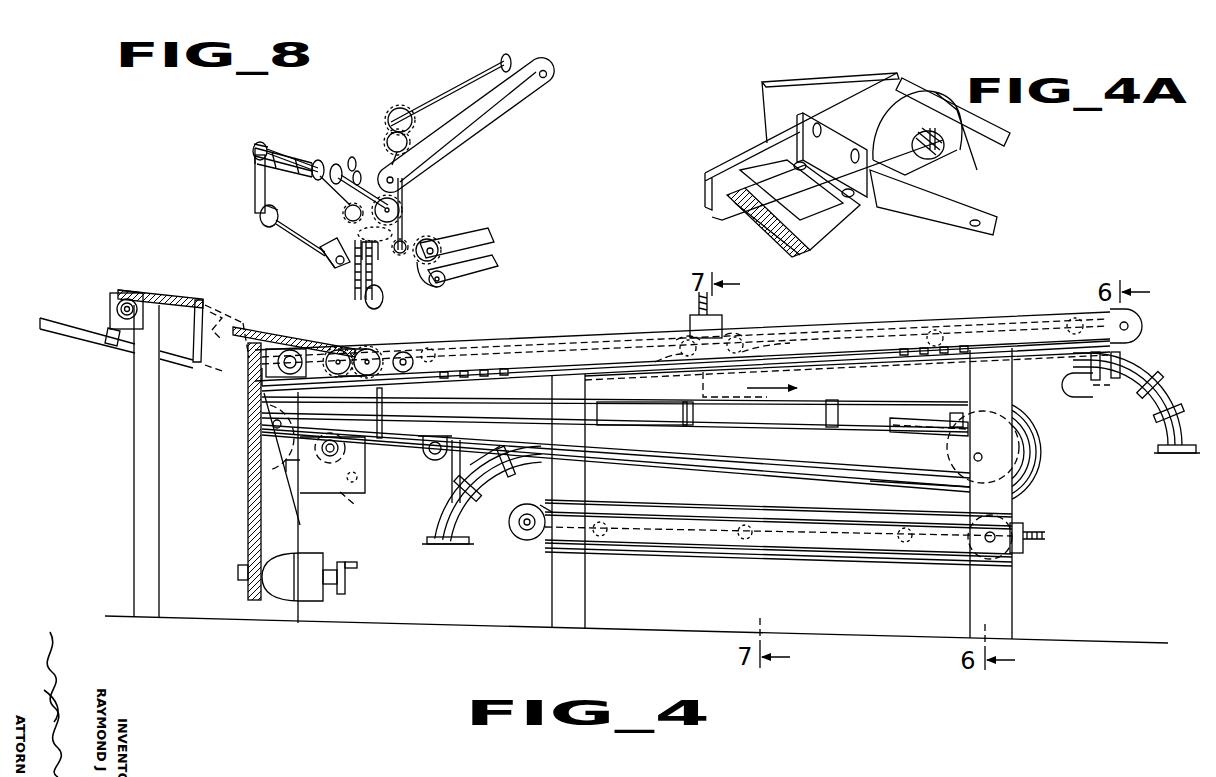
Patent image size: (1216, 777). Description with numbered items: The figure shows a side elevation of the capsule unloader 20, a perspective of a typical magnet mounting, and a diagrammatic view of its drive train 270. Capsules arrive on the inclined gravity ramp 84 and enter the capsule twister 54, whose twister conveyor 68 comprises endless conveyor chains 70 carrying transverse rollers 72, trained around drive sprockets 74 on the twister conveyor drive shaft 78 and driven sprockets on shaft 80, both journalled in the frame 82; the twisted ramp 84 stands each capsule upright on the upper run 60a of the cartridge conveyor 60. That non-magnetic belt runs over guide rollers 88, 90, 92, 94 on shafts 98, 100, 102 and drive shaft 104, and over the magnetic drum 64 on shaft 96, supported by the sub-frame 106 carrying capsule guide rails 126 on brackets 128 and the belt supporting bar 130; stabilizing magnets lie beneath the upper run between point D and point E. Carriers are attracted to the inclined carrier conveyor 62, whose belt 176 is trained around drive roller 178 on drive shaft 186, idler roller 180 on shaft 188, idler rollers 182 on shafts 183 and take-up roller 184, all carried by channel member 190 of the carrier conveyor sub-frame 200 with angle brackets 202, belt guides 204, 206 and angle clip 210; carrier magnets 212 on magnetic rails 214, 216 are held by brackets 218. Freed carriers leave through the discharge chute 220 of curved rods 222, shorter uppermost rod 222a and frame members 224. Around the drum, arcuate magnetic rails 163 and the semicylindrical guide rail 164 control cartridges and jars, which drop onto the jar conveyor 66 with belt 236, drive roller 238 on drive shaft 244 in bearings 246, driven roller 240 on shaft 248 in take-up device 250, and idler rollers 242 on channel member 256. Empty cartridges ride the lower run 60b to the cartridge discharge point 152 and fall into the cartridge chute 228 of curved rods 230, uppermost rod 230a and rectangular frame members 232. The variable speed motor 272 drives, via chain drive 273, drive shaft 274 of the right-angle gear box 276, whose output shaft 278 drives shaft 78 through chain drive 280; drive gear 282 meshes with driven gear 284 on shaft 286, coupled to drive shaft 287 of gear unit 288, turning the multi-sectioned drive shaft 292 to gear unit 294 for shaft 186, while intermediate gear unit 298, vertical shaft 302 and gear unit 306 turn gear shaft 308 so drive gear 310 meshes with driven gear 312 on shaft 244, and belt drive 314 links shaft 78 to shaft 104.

In FIG. 4, the capsule unloader 20 is at (578, 333).
In FIG. 4, the capsule twister 54 is at (122, 290).
In FIG. 8, the capsule twister 54 is at (252, 158).
In FIG. 4, the cartridge conveyor 60 is at (862, 426).
In FIG. 8, the cartridge conveyor 60 is at (328, 262).
In FIG. 4, the upper run of cartridge conveyor 60a is at (806, 418).
In FIG. 4, the lower run of cartridge conveyor 60b is at (965, 491).
In FIG. 4, the carrier conveyor 62 is at (768, 330).
In FIG. 8, the carrier conveyor 62 is at (548, 95).
In FIG. 4, the magnetic drum 64 is at (945, 455).
In FIG. 4, the jar conveyor 66 is at (670, 496).
In FIG. 8, the jar conveyor 66 is at (490, 240).
In FIG. 4, the twister conveyor 68 is at (185, 290).
In FIG. 4, the endless conveyor chains 70 is at (130, 292).
In FIG. 8, the endless conveyor chains 70 is at (252, 152).
In FIG. 8, the transverse rollers 72 is at (334, 163).
In FIG. 8, the drive sprockets 74 is at (316, 160).
In FIG. 4, the twister conveyor drive shaft 78 is at (300, 350).
In FIG. 8, the twister conveyor drive shaft 78 is at (262, 142).
In FIG. 4, the shaft 80 is at (118, 338).
In FIG. 4, the frame 82 is at (133, 451).
In FIG. 4, the inclined gravity ramp 84 is at (42, 332).
In FIG. 4, the guide roller 88 is at (426, 442).
In FIG. 4, the guide roller 90 is at (363, 452).
In FIG. 4, the guide roller 92 is at (348, 486).
In FIG. 4, the guide roller 94 is at (265, 463).
In FIG. 4, the shaft 96 is at (980, 455).
In FIG. 4, the shaft 98 is at (447, 442).
In FIG. 4, the shaft 100 is at (320, 458).
In FIG. 4, the shaft 102 is at (348, 482).
In FIG. 4, the drive shaft of cartridge conveyor 104 is at (273, 427).
In FIG. 8, the drive shaft of cartridge conveyor 104 is at (262, 224).
In FIG. 4, the sub-frame 106 is at (702, 454).
In FIG. 4, the capsule guide rails 126 is at (606, 408).
In FIG. 4, the brackets 128 is at (683, 412).
In FIG. 4, the belt supporting bar 130 is at (740, 468).
In FIG. 4, the cartridge discharge point 152 is at (500, 443).
In FIG. 4, the arcuate magnetic rails 163 is at (1035, 486).
In FIG. 4, the semicylindrical guide rail 164 is at (1043, 456).
In FIG. 4, the endless non-magnetic belt 176 is at (958, 330).
In FIG. 4A, the endless non-magnetic belt 176 is at (990, 118).
In FIG. 4, the drive roller 178 is at (1132, 306).
In FIG. 4, the idler roller 180 is at (460, 353).
In FIG. 4, the idler rollers 182 is at (435, 350).
In FIG. 4, the shafts 183 is at (680, 340).
In FIG. 4, the take-up roller 184 is at (716, 320).
In FIG. 4, the drive shaft of carrier conveyor 186 is at (1135, 324).
In FIG. 8, the drive shaft of carrier conveyor 186 is at (548, 82).
In FIG. 4, the shaft 188 is at (408, 352).
In FIG. 4, the channel member 190 is at (805, 351).
In FIG. 4, the carrier conveyor sub-frame 200 is at (932, 330).
In FIG. 4, the angle brackets 202 is at (585, 368).
In FIG. 4A, the angle brackets 202 is at (985, 210).
In FIG. 4A, the angle belt guide 204 is at (873, 210).
In FIG. 4A, the angle belt guide 206 is at (755, 157).
In FIG. 4A, the angle clip 210 is at (790, 140).
In FIG. 4A, the carrier magnets 212 is at (912, 105).
In FIG. 4A, the magnetic rail 214 is at (838, 218).
In FIG. 4A, the magnetic rail 216 is at (760, 185).
In FIG. 4A, the brackets 218 is at (835, 130).
In FIG. 4, the discharge chute 220 is at (1152, 430).
In FIG. 4, the curved rods 222 is at (1128, 392).
In FIG. 4, the uppermost curved rod 222a is at (1115, 350).
In FIG. 4, the frame members 224 is at (1168, 392).
In FIG. 4, the cartridge chute 228 is at (423, 531).
In FIG. 4, the curved rods 230 is at (448, 522).
In FIG. 4, the uppermost rod 230a is at (462, 457).
In FIG. 4, the rectangular frame members 232 is at (478, 503).
In FIG. 4, the endless belt 236 is at (745, 497).
In FIG. 4, the drive roller 238 is at (512, 530).
In FIG. 4, the driven roller 240 is at (965, 552).
In FIG. 4, the idler rollers 242 is at (605, 541).
In FIG. 4, the drive shaft of jar conveyor 244 is at (526, 542).
In FIG. 8, the drive shaft of jar conveyor 244 is at (460, 272).
In FIG. 4, the bearings 246 is at (548, 560).
In FIG. 4, the shaft 248 is at (996, 545).
In FIG. 4, the take-up device 250 is at (1024, 547).
In FIG. 4, the channel member 256 is at (692, 547).
In FIG. 4, the drive train 270 is at (245, 500).
In FIG. 8, the drive train 270 is at (522, 115).
In FIG. 4, the variable speed motor 272 is at (300, 592).
In FIG. 8, the variable speed motor 272 is at (384, 296).
In FIG. 4, the chain drive 273 is at (245, 535).
In FIG. 8, the chain drive 273 is at (354, 282).
In FIG. 4, the drive shaft of gear box 274 is at (225, 365).
In FIG. 4, the right-angle gear box 276 is at (258, 375).
In FIG. 8, the right-angle gear box 276 is at (374, 262).
In FIG. 8, the output shaft of gear box 278 is at (318, 248).
In FIG. 4, the chain drive 280 is at (290, 340).
In FIG. 8, the chain drive 280 is at (290, 238).
In FIG. 8, the drive gear 282 is at (356, 216).
In FIG. 4, the driven gear 284 is at (340, 352).
In FIG. 8, the driven gear 284 is at (400, 205).
In FIG. 4, the shaft 286 is at (372, 352).
In FIG. 8, the shaft 286 is at (358, 200).
In FIG. 8, the drive shaft of gear unit 287 is at (356, 170).
In FIG. 8, the right angle gear unit 288 is at (351, 156).
In FIG. 8, the multi-sectioned drive shaft 292 is at (405, 115).
In FIG. 8, the right angle gear unit 294 is at (515, 58).
In FIG. 8, the intermediate right angle gear unit 298 is at (413, 120).
In FIG. 8, the vertical shaft 302 is at (408, 142).
In FIG. 8, the right angle gear unit 306 is at (420, 240).
In FIG. 8, the gear shaft 308 is at (445, 240).
In FIG. 8, the drive gear 310 is at (448, 256).
In FIG. 8, the driven gear 312 is at (425, 272).
In FIG. 8, the belt drive 314 is at (255, 190).
In FIG. 4, the point D is at (262, 413).
In FIG. 4, the point E is at (950, 438).